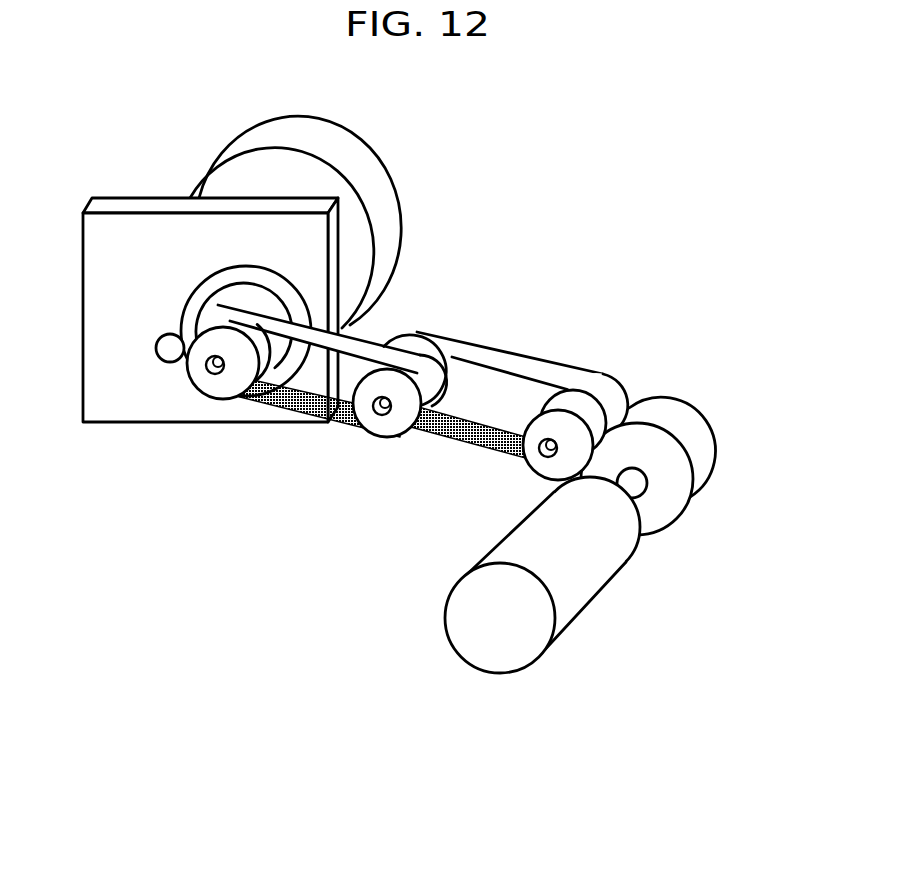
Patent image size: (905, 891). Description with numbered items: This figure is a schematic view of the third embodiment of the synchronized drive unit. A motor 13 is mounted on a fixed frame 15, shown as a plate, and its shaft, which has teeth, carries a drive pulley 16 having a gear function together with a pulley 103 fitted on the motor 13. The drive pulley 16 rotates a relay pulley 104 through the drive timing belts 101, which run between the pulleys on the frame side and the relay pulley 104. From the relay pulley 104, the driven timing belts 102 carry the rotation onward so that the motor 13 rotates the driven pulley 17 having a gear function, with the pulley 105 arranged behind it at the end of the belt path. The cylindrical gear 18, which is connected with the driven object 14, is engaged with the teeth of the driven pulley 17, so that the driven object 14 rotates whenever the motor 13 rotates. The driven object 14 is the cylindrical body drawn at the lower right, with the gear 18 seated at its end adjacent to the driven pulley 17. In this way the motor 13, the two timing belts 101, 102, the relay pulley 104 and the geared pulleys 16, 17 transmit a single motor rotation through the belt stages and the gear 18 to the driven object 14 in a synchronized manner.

The motor 13 is at (354, 142).
The driven object 14 is at (590, 593).
The fixed frame 15 is at (132, 205).
The drive pulley having a gear function 16 is at (275, 272).
The driven pulley having a gear function 17 is at (537, 467).
The gear connected with a driven object 18 is at (707, 462).
The drive timing belts 101 is at (382, 339).
The driven timing belts 102 is at (513, 358).
The driven pulley 103 is at (209, 388).
The relay pulley 104 is at (377, 437).
The driven pulley 105 is at (586, 399).